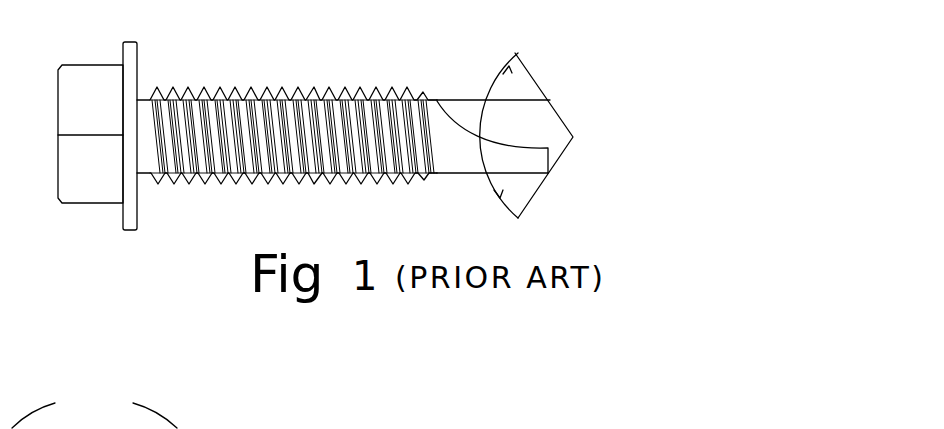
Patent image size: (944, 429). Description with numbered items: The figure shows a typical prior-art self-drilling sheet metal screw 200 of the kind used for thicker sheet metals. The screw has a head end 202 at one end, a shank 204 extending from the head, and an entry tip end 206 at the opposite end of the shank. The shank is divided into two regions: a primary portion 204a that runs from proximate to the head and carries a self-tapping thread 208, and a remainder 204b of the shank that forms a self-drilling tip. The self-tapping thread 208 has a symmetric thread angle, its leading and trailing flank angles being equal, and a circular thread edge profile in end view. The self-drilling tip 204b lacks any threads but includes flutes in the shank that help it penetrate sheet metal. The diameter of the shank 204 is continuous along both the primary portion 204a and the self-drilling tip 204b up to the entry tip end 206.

The self-drilling sheet metal screw 200 is at (350, 142).
The head end 202 is at (100, 228).
The shank 204 is at (345, 120).
The primary portion 204a is at (287, 133).
The remainder of the shank 204b is at (553, 183).
The entry tip end 206 is at (573, 168).
The self-tapping thread 208 is at (297, 88).